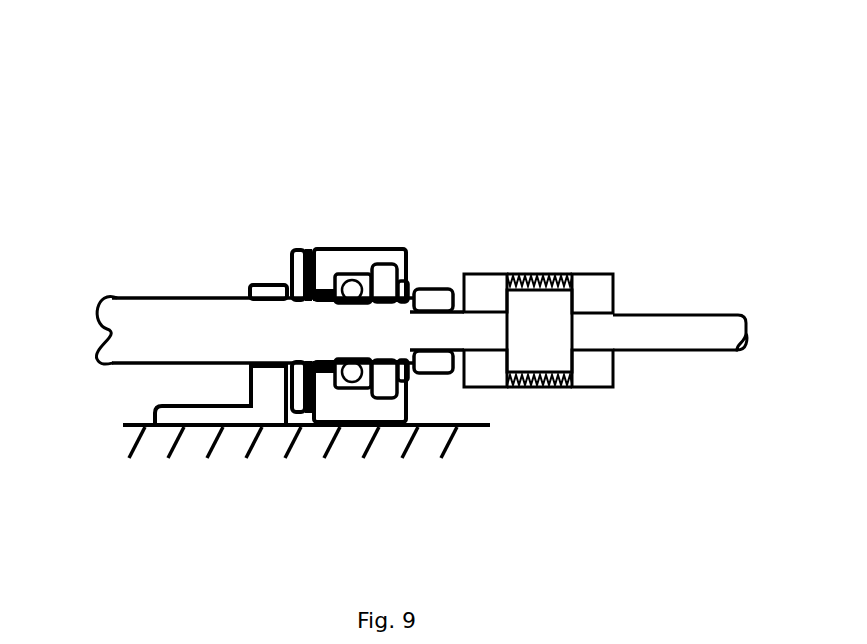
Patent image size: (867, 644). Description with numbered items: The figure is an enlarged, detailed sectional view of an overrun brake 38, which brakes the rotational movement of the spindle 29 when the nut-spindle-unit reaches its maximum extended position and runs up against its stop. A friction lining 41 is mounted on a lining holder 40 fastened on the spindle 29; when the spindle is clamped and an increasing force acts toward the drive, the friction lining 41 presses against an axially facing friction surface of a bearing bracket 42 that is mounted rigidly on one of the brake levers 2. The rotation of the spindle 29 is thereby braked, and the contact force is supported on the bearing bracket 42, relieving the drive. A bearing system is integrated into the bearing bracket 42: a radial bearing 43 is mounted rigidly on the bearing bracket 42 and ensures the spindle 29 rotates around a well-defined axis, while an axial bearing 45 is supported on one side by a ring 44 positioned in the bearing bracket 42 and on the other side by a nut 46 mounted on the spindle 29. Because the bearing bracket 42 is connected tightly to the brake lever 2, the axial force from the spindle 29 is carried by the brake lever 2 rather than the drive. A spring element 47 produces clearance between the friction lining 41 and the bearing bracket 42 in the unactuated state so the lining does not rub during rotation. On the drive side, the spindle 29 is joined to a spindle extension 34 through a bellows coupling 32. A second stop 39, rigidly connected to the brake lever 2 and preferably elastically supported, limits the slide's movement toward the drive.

The brake lever 2 is at (205, 442).
The spindle 29 is at (160, 323).
The bellows coupling 32 is at (542, 322).
The spindle extension 34 is at (638, 332).
The overrun brake 38 is at (268, 211).
The second stop 39 is at (265, 397).
The lining holder 40 is at (293, 262).
The friction lining 41 is at (309, 270).
The bearing bracket 42 is at (323, 403).
The radial bearing 43 is at (351, 382).
The ring 44 is at (380, 283).
The axial bearing 45 is at (406, 366).
The nut 46 is at (429, 299).
The spring element 47 is at (321, 290).